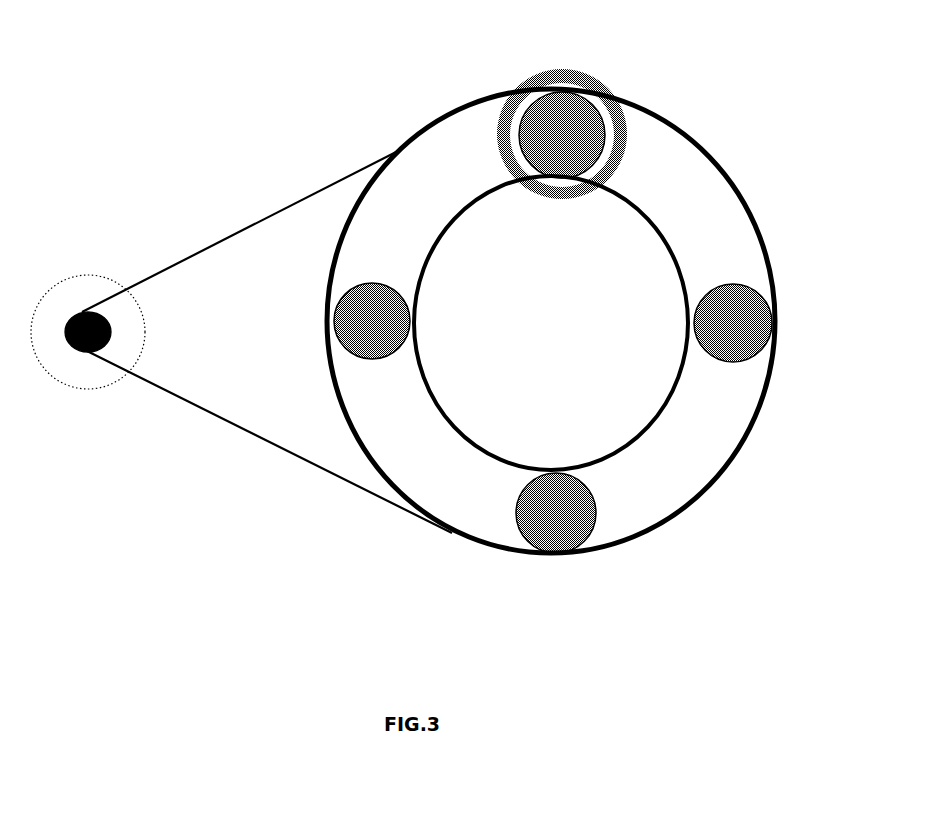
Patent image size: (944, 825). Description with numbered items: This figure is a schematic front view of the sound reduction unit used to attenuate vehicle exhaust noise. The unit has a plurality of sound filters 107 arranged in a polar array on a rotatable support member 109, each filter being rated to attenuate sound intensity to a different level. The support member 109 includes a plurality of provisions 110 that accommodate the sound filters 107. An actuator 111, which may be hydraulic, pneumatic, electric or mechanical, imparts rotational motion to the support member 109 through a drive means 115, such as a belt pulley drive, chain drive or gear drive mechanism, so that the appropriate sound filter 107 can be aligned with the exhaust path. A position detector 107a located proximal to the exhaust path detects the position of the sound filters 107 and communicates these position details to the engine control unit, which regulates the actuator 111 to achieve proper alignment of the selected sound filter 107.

The sound filters 107 is at (720, 345).
The position detector 107a is at (565, 72).
The support member 109 is at (718, 193).
The provisions 110 is at (614, 122).
The actuator 111 is at (70, 368).
The drive means 115 is at (214, 243).